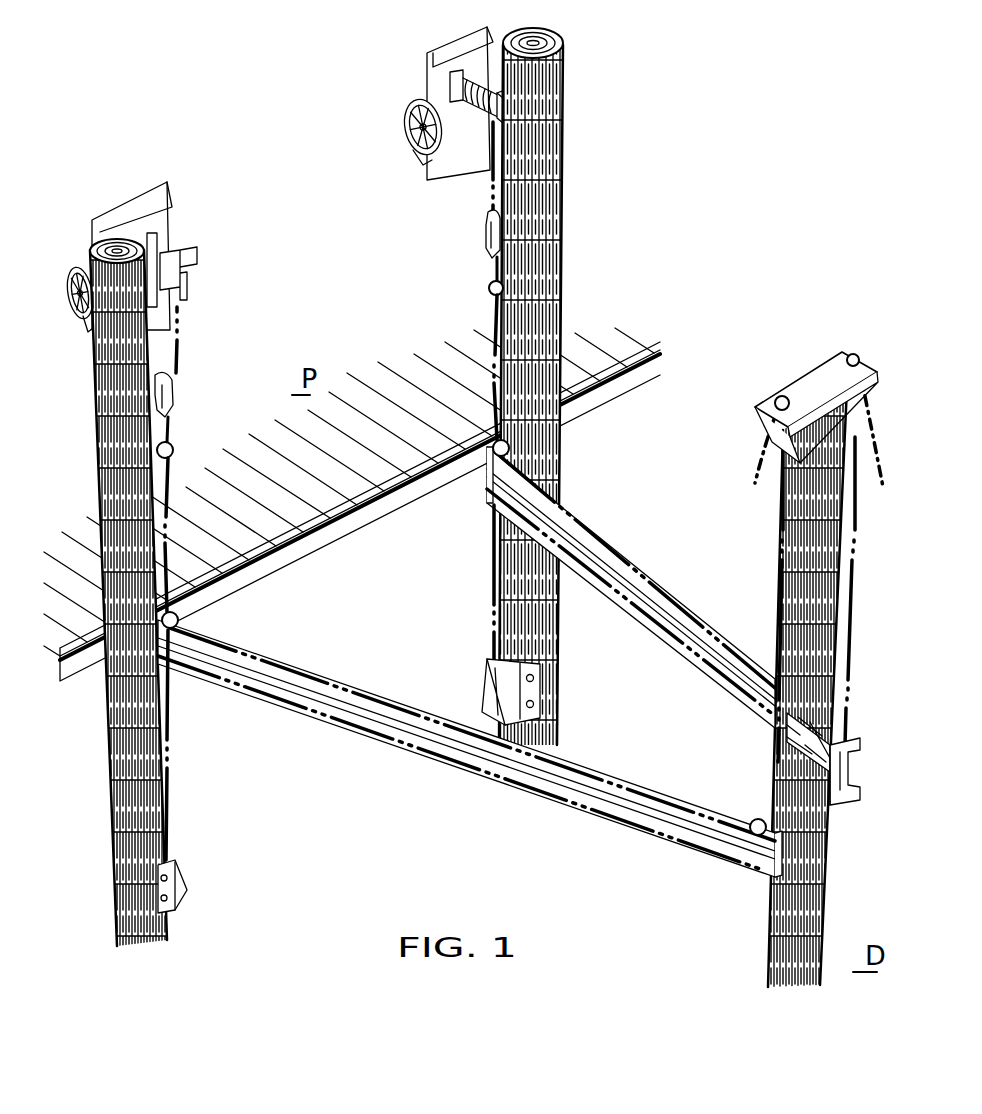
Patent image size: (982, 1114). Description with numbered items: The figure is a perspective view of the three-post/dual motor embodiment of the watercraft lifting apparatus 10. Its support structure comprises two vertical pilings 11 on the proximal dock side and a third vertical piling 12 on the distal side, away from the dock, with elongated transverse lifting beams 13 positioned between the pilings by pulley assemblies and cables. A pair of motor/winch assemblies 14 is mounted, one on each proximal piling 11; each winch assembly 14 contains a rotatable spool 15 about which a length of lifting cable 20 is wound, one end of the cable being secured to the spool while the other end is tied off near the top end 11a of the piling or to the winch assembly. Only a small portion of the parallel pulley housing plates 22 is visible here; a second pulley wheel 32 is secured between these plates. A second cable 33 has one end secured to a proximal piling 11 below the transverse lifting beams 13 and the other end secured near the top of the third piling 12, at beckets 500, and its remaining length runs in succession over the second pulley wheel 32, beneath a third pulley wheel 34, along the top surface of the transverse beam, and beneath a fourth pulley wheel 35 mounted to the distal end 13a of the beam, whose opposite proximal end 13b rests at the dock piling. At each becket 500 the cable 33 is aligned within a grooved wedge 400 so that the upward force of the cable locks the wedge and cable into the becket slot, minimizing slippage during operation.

The dock mooring system 10 is at (233, 86).
The vertical piling 11 is at (110, 447).
The top end of piling 11a is at (95, 255).
The third vertical piling 12 is at (810, 895).
The transverse lifting beam 13 is at (407, 742).
The distal end of transverse beam 13a is at (757, 884).
The rail end at dock piling 13b is at (485, 490).
The motor/winch assembly 14 is at (165, 172).
The rotatable spool 15 is at (470, 108).
The lifting cable 20 is at (182, 363).
The parallel pulley housing plates 22 is at (487, 230).
The second pulley wheel 32 is at (490, 287).
The second cable 33 is at (173, 473).
The third pulley wheel 34 is at (183, 612).
The fourth pulley wheel 35 is at (880, 705).
The grooved wedge 400 is at (773, 400).
The L-shaped becket 500 is at (173, 877).